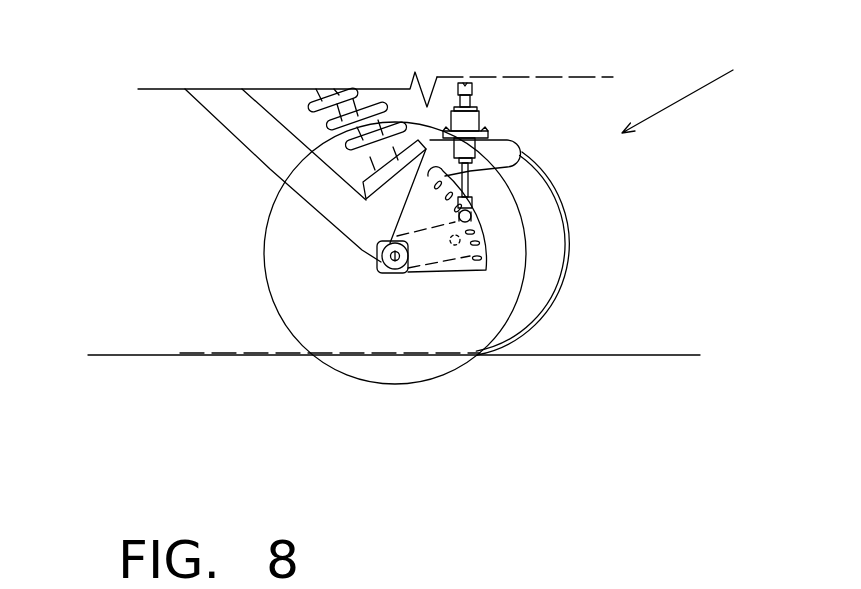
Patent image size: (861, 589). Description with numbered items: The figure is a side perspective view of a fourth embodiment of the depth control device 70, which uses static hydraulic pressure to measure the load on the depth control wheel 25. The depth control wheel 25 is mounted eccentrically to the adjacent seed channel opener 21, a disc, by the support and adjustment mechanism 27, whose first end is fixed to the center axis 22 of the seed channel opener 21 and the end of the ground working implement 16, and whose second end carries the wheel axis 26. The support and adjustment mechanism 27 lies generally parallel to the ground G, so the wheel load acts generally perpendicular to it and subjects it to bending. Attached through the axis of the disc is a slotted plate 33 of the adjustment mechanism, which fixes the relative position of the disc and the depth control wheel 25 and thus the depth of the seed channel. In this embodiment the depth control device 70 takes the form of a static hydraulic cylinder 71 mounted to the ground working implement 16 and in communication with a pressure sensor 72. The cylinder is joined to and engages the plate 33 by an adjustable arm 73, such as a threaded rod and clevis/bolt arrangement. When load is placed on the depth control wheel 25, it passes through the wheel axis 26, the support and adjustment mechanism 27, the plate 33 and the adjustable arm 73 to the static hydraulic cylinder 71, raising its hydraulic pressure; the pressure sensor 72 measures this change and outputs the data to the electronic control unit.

The ground working implement 16 is at (242, 142).
The seed channel opener 21 is at (417, 383).
The center axis 22 is at (392, 258).
The depth control wheel 25 is at (540, 323).
The wheel axis 26 is at (458, 245).
The support and adjustment mechanism 27 is at (450, 263).
The plate 33 is at (486, 251).
The depth control device 70 is at (698, 91).
The static hydraulic cylinder 71 is at (483, 122).
The pressure sensor 72 is at (473, 103).
The adjustable arm 73 is at (473, 171).
The ground G is at (133, 357).